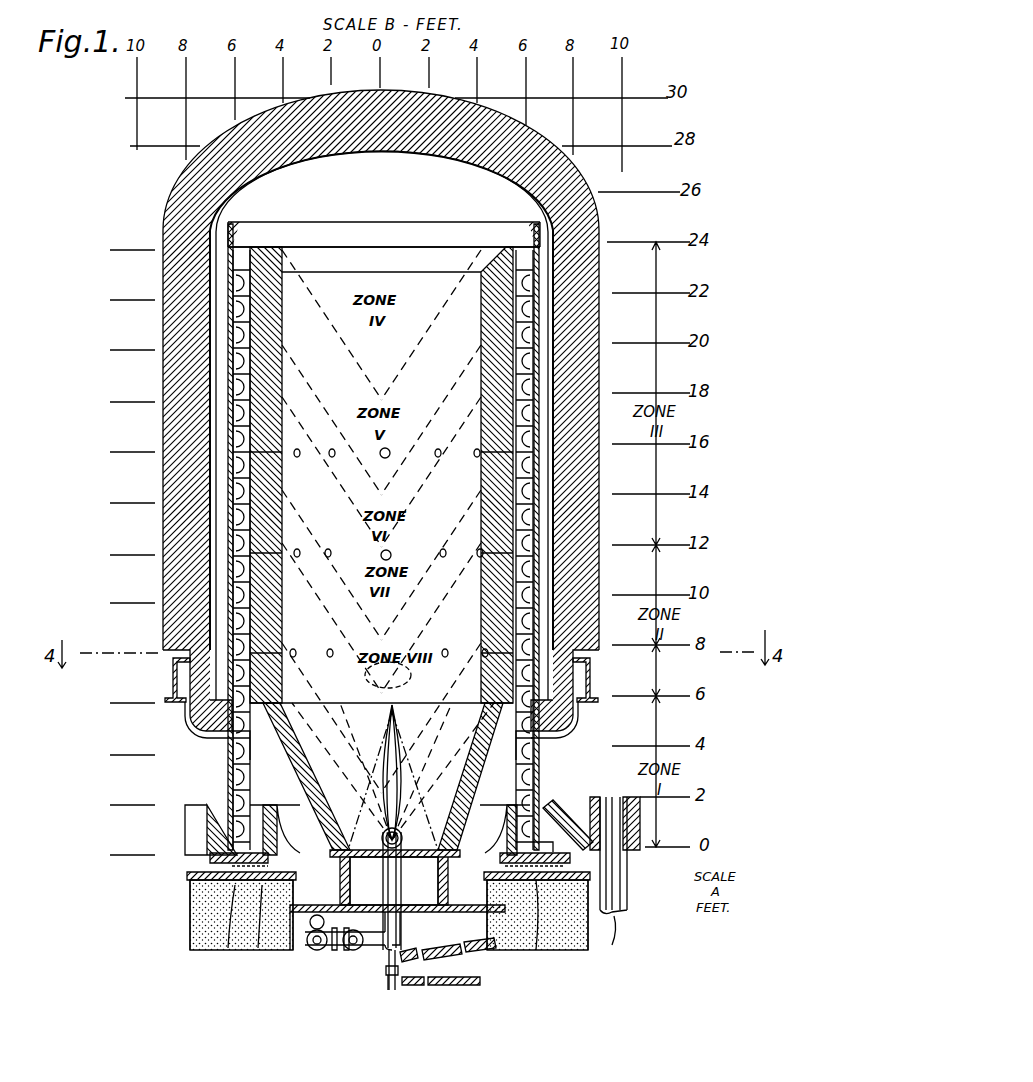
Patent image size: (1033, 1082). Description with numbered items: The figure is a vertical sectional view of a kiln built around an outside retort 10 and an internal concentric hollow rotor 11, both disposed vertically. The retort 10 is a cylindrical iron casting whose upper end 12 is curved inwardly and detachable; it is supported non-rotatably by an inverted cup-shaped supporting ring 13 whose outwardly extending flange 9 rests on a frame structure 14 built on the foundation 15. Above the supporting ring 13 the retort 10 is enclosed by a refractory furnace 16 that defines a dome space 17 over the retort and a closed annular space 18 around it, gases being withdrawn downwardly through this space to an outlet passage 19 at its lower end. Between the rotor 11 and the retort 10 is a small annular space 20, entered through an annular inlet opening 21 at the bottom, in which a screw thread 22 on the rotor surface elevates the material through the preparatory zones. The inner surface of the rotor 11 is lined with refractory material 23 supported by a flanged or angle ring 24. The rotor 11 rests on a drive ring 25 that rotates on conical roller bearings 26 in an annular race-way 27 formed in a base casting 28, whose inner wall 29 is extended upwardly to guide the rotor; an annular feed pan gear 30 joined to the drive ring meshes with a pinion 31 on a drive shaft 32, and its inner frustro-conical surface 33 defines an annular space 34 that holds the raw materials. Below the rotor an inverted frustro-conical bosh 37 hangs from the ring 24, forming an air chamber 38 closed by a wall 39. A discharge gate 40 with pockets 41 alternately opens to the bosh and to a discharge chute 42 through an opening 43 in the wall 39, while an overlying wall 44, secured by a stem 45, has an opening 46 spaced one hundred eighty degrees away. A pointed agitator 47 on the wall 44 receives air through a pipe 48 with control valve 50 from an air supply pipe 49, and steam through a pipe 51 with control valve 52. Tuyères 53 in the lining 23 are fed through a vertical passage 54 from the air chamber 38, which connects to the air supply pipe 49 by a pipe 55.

The outwardly extending flange 9 is at (180, 650).
The retort 10 is at (538, 292).
The rotor 11 is at (530, 345).
The upper end of the casting 12 is at (590, 222).
The supporting ring 13 is at (200, 722).
The frame structure 14 is at (172, 681).
The foundation 15 is at (190, 926).
The furnace 16 is at (185, 224).
The dome space 17 is at (290, 178).
The closed annular space 18 is at (215, 373).
The outlet passage 19 is at (365, 675).
The annular space 20 is at (240, 465).
The annular inlet opening 21 is at (215, 857).
The screw thread 22 is at (250, 545).
The refractory material 23 is at (250, 310).
The flanged or angle ring 24 is at (236, 742).
The drive ring 25 is at (540, 935).
The conical roller bearings 26 is at (575, 930).
The annular race-way 27 is at (235, 905).
The base casting 28 is at (266, 910).
The inner wall of the race-way 29 is at (252, 925).
The annular feed pan gear 30 is at (190, 830).
The pinion 31 is at (632, 850).
The drive shaft 32 is at (612, 912).
The inner frustro-conical surface 33 is at (555, 805).
The annular space 34 is at (545, 815).
The discharge hopper or bosh 37 is at (278, 762).
The air chamber 38 is at (232, 877).
The wall 39 is at (353, 952).
The discharge gate 40 is at (336, 950).
The pockets 41 is at (437, 878).
The discharge chute 42 is at (478, 950).
The opening 43 is at (440, 986).
The wall 44 is at (425, 842).
The stem 45 is at (388, 890).
The opening 46 is at (345, 856).
The agitator 47 is at (400, 712).
The pipe 48 is at (390, 992).
The air supply pipe 49 is at (314, 952).
The control valve 50 is at (335, 948).
The pipe 51 is at (396, 976).
The control valve 52 is at (396, 992).
The tuyères 53 is at (262, 525).
The vertical passage 54 is at (258, 573).
The pipe 55 is at (312, 930).